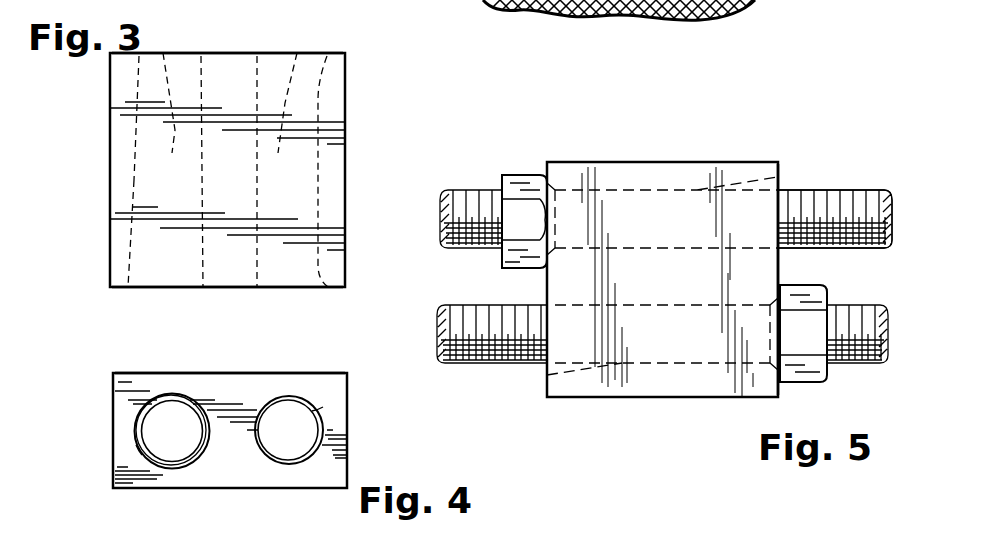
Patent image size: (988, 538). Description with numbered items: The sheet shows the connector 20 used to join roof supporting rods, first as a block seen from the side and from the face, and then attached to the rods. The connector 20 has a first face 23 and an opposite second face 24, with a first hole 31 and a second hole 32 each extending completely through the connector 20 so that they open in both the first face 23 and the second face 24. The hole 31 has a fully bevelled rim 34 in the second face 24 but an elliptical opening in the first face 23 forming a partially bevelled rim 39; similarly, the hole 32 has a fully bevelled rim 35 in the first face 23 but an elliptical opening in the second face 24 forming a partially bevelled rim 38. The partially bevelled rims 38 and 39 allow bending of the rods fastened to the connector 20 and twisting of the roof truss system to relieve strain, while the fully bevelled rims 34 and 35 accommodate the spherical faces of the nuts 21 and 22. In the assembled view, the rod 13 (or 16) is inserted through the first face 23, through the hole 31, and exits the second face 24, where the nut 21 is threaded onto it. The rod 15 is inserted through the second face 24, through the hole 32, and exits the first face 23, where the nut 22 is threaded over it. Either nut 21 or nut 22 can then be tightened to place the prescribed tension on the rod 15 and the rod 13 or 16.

In FIG. 5, the rod 13 is at (847, 192).
In FIG. 5, the rod 15 is at (510, 305).
In FIG. 5, the rod 16 is at (835, 219).
In FIG. 4, the connector 20 is at (283, 373).
In FIG. 5, the connector 20 is at (694, 162).
In FIG. 5, the nut 21 is at (521, 177).
In FIG. 5, the nut 22 is at (825, 299).
In FIG. 3, the first face 23 is at (233, 53).
In FIG. 4, the first face 23 is at (210, 384).
In FIG. 5, the first face 23 is at (778, 267).
In FIG. 3, the second face 24 is at (225, 287).
In FIG. 5, the second face 24 is at (548, 379).
In FIG. 3, the first hole 31 is at (300, 48).
In FIG. 4, the first hole 31 is at (300, 446).
In FIG. 5, the first hole 31 is at (641, 188).
In FIG. 3, the second hole 32 is at (171, 34).
In FIG. 4, the second hole 32 is at (186, 446).
In FIG. 5, the second hole 32 is at (670, 368).
In FIG. 3, the bevelled rim 34 is at (256, 280).
In FIG. 3, the bevelled rim 35 is at (139, 54).
In FIG. 4, the bevelled rim 35 is at (138, 452).
In FIG. 3, the partially bevelled rim 38 is at (136, 255).
In FIG. 3, the partially bevelled rim 39 is at (327, 60).
In FIG. 4, the partially bevelled rim 39 is at (320, 418).